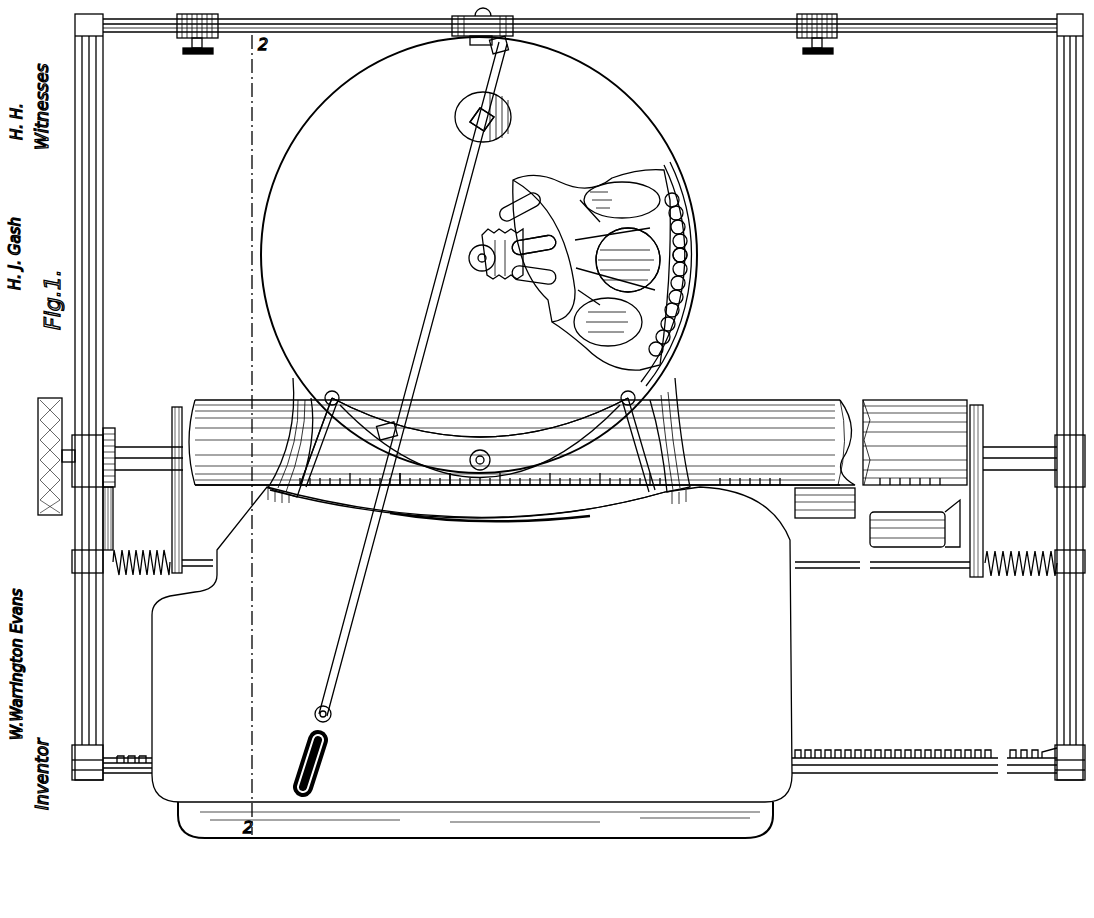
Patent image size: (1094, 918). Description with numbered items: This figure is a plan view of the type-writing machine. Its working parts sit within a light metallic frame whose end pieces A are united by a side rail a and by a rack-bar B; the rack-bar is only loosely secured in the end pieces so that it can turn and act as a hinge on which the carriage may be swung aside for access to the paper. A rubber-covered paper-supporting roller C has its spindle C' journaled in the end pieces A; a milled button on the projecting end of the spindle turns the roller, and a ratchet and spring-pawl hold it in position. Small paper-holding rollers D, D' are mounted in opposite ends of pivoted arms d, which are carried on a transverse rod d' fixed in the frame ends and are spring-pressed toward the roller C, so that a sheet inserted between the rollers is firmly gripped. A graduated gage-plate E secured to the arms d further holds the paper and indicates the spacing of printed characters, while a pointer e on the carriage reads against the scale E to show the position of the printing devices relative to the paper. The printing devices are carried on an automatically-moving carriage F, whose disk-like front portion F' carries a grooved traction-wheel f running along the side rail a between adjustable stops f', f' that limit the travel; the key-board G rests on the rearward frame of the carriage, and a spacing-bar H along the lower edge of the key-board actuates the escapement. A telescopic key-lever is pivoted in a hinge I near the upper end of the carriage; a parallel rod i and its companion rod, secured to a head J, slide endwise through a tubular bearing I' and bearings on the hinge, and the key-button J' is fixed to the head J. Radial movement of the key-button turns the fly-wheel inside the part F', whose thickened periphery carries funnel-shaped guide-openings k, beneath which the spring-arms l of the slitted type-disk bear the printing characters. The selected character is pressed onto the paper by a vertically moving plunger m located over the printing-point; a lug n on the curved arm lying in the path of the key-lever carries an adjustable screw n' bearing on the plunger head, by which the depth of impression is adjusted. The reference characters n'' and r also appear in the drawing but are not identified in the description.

The end pieces A is at (578, 397).
The side rail a is at (955, 33).
The rack-bar B is at (900, 755).
The paper-supporting roller C is at (522, 428).
The spindle C' is at (586, 444).
The small roller D is at (915, 523).
The small roller D' is at (915, 427).
The pivoted arms d is at (576, 491).
The transverse rod d' is at (575, 579).
The graduated gage-plate E is at (567, 497).
The pointer e is at (462, 486).
The carriage F is at (459, 255).
The disk-like front portion F' is at (536, 265).
The grooved traction-wheel f is at (505, 32).
The adjustable stops f' is at (507, 43).
The key-board G is at (165, 712).
The spacing-bar H is at (475, 820).
The hinge I is at (489, 117).
The tubular bearing I' is at (414, 376).
The parallel rod i is at (470, 247).
The head J is at (329, 710).
The key-button J' is at (321, 763).
The guide-openings k is at (690, 248).
The spring-arms l is at (632, 238).
The plunger m is at (534, 250).
The lug n is at (480, 434).
The adjustable screw n' is at (497, 457).
The strut n'' is at (321, 441).
The guide edge r is at (560, 425).